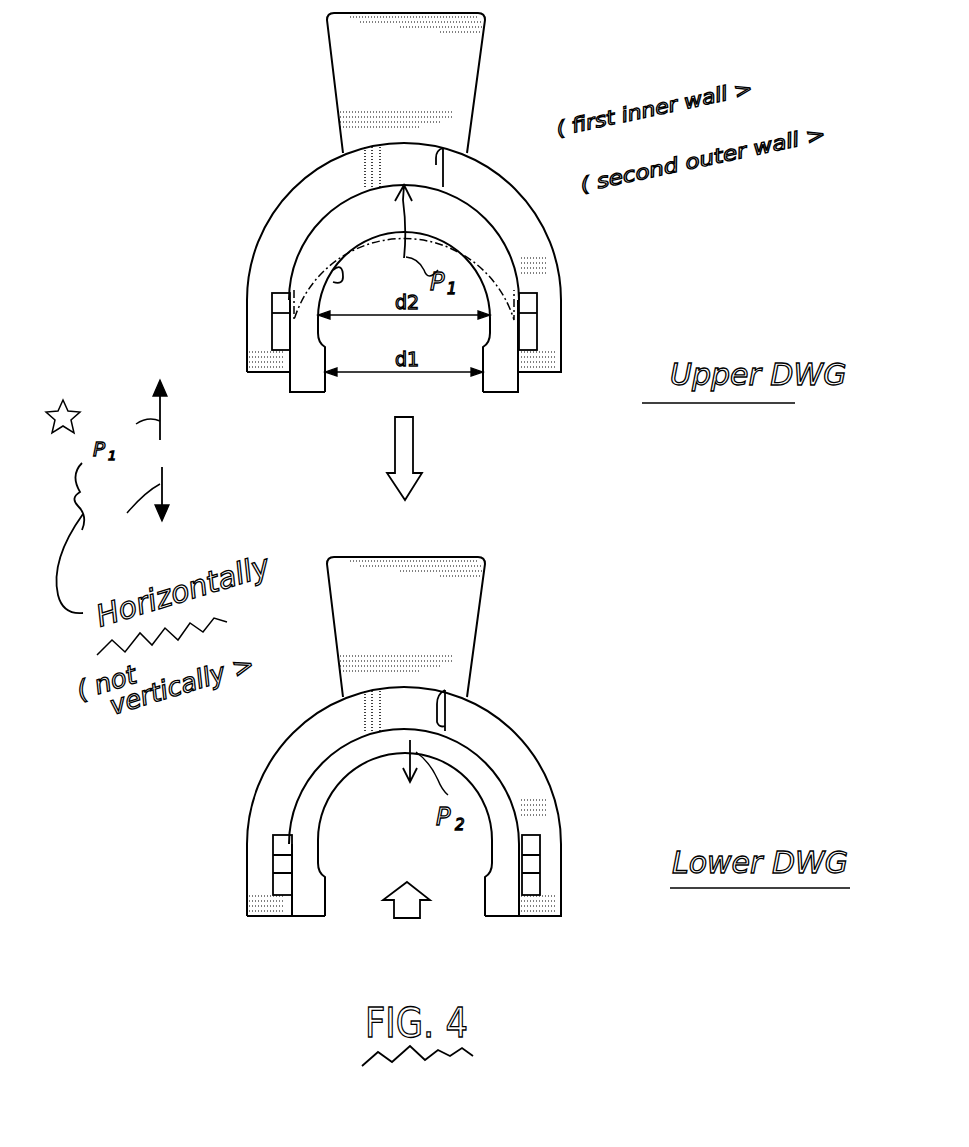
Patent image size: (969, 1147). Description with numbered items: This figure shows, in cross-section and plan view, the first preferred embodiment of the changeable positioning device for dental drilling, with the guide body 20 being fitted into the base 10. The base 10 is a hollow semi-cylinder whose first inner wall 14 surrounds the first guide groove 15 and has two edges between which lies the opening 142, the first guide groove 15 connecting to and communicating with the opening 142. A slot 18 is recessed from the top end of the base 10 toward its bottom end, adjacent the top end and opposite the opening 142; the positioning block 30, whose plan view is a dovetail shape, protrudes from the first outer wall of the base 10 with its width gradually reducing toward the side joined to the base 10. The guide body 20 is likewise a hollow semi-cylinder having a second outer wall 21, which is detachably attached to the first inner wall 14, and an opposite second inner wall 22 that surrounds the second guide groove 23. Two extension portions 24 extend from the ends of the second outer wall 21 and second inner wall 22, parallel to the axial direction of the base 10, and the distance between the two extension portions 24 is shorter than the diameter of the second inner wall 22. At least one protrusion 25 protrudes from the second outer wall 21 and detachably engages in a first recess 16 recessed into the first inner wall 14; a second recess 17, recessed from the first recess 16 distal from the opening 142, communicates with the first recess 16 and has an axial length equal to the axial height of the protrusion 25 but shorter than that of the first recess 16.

The base 10 is at (541, 252).
The first inner wall 14 is at (430, 190).
The first guide groove 15 is at (375, 192).
The first recess 16 is at (537, 884).
The second recess 17 is at (530, 303).
The slot 18 is at (445, 148).
The guide body 20 is at (517, 389).
The second outer wall 21 is at (482, 214).
The second inner wall 22 is at (333, 282).
The second guide groove 23 is at (417, 821).
The extension portion 24 is at (297, 384).
The protrusion 25 is at (532, 333).
The positioning block 30 is at (465, 73).
The opening 142 is at (440, 912).